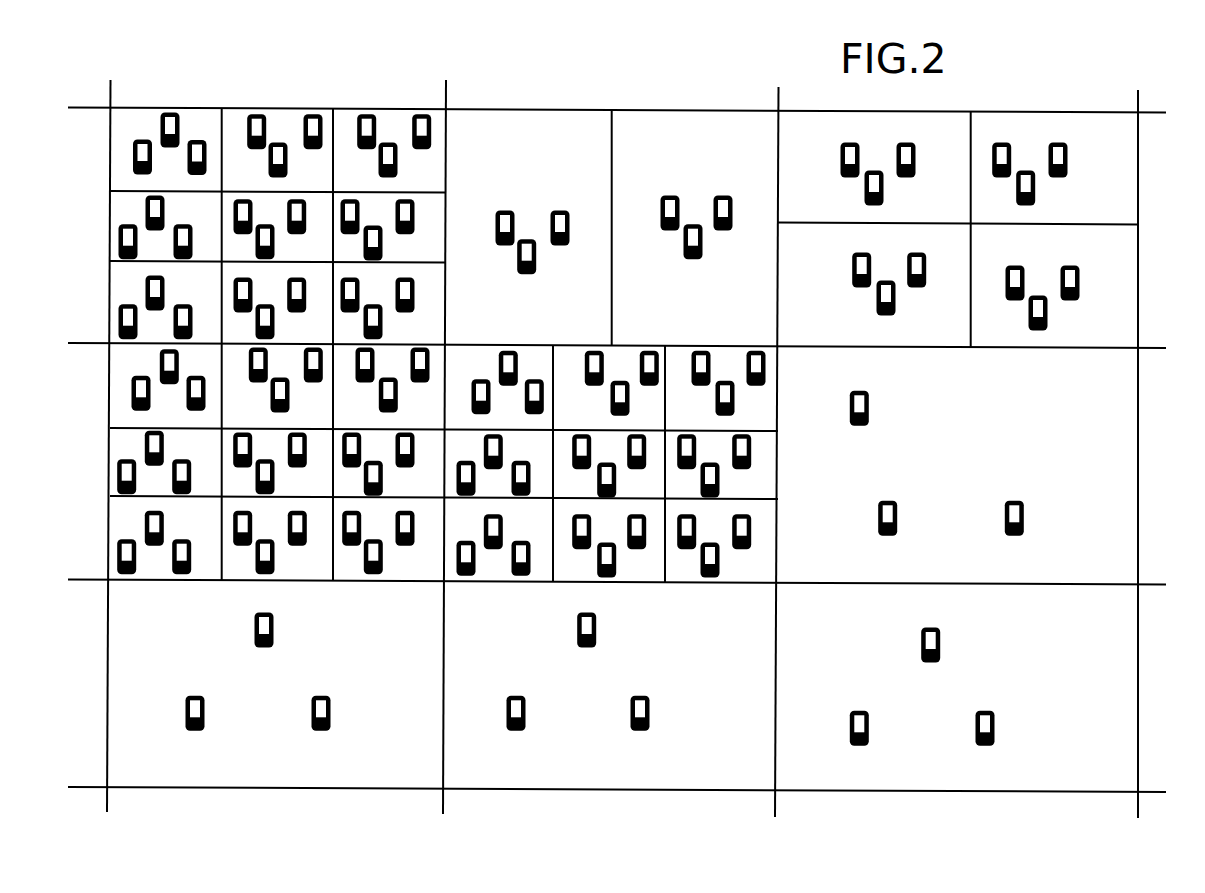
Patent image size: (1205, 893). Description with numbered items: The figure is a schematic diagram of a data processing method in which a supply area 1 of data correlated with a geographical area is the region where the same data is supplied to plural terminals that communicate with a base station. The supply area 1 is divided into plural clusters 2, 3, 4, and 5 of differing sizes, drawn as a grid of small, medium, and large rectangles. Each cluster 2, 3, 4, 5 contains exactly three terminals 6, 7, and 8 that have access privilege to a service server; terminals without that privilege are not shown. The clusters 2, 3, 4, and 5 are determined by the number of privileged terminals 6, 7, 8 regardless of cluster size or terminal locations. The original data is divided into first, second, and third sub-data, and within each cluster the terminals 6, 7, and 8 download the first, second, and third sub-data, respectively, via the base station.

The supply area 1 is at (745, 90).
The cluster 2 is at (128, 112).
The cluster 3 is at (1103, 120).
The cluster 4 is at (552, 115).
The cluster 5 is at (208, 770).
The terminal 6 is at (171, 113).
The terminal 7 is at (132, 154).
The terminal 8 is at (200, 143).